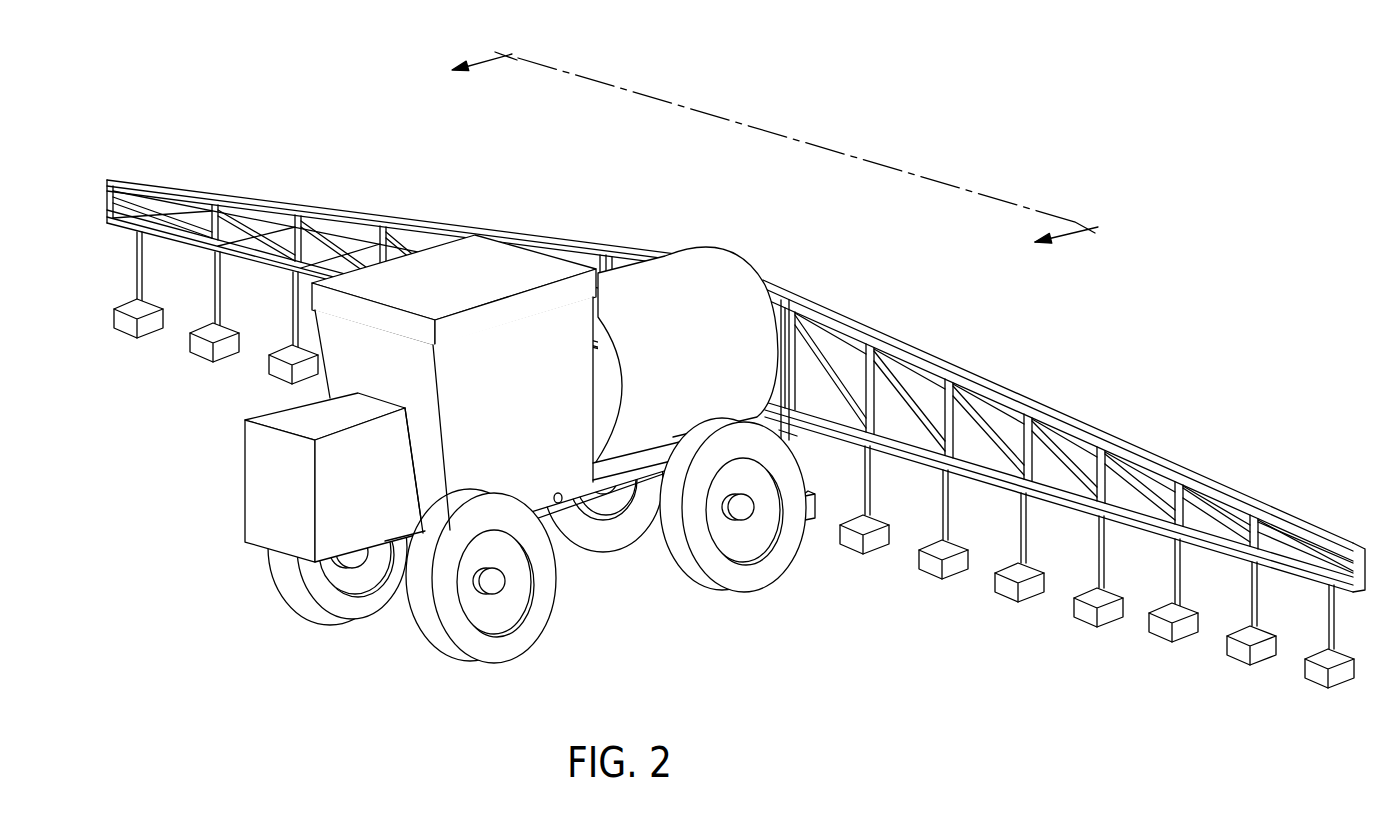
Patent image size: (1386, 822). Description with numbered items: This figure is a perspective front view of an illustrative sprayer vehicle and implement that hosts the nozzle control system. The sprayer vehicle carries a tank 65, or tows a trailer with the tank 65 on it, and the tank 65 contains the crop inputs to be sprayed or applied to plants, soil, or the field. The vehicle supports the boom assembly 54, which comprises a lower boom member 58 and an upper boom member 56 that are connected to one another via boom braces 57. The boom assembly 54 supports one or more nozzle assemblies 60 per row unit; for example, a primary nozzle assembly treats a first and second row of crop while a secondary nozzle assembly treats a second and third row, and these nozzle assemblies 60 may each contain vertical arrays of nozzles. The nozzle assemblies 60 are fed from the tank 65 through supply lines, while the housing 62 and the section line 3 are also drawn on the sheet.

The section line 3- 3 is at (790, 142).
The boom assembly 54 is at (158, 150).
The upper boom member 56 is at (313, 207).
The boom braces 57 is at (292, 243).
The lower boom member 58 is at (198, 254).
The nozzle assemblies 60 is at (130, 327).
The cab / product tank housing 62 is at (446, 287).
The tank 65 is at (682, 293).